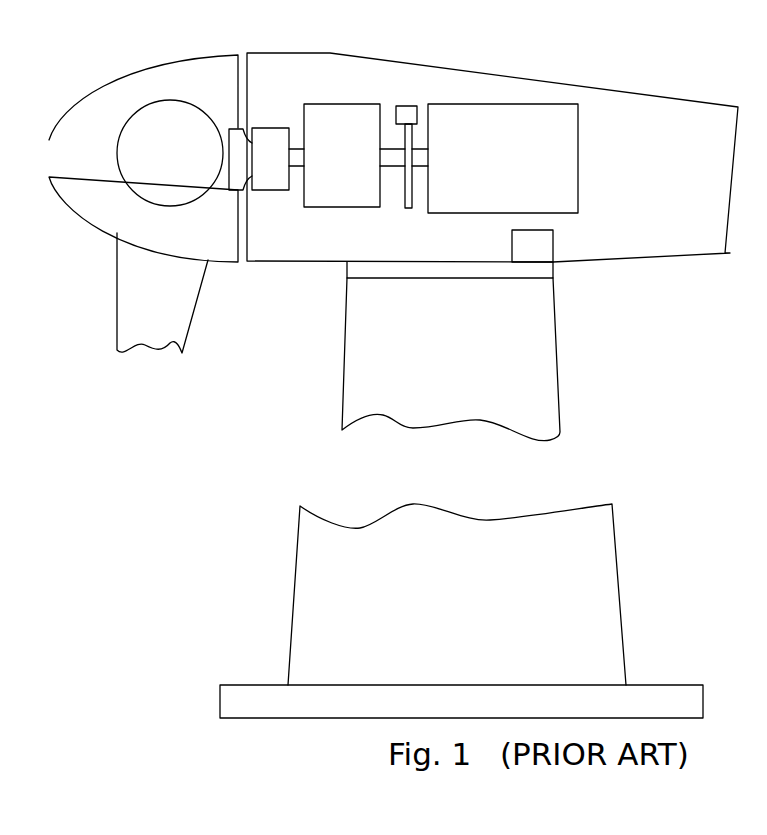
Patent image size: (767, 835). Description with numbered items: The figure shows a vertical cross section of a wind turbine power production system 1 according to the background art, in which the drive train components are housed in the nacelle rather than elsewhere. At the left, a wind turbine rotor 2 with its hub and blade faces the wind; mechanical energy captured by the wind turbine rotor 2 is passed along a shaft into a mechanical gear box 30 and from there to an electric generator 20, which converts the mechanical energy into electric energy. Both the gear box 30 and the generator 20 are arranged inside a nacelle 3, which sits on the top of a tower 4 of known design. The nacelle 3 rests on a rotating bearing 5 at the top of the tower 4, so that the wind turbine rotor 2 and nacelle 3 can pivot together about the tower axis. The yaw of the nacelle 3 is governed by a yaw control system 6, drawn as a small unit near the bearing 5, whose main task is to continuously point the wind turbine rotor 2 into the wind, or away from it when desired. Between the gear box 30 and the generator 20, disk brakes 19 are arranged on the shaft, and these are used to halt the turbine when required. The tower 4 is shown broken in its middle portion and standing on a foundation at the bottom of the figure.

The wind power production system 1 is at (129, 158).
The wind turbine rotor 2 is at (143, 293).
The nacelle 3 is at (392, 58).
The tower 4 is at (461, 498).
The rotating bearing 5 is at (553, 263).
The yaw control system 6 is at (532, 246).
The disk brakes 19 is at (406, 145).
The electric generator 20 is at (503, 158).
The mechanical gear box 30 is at (342, 155).